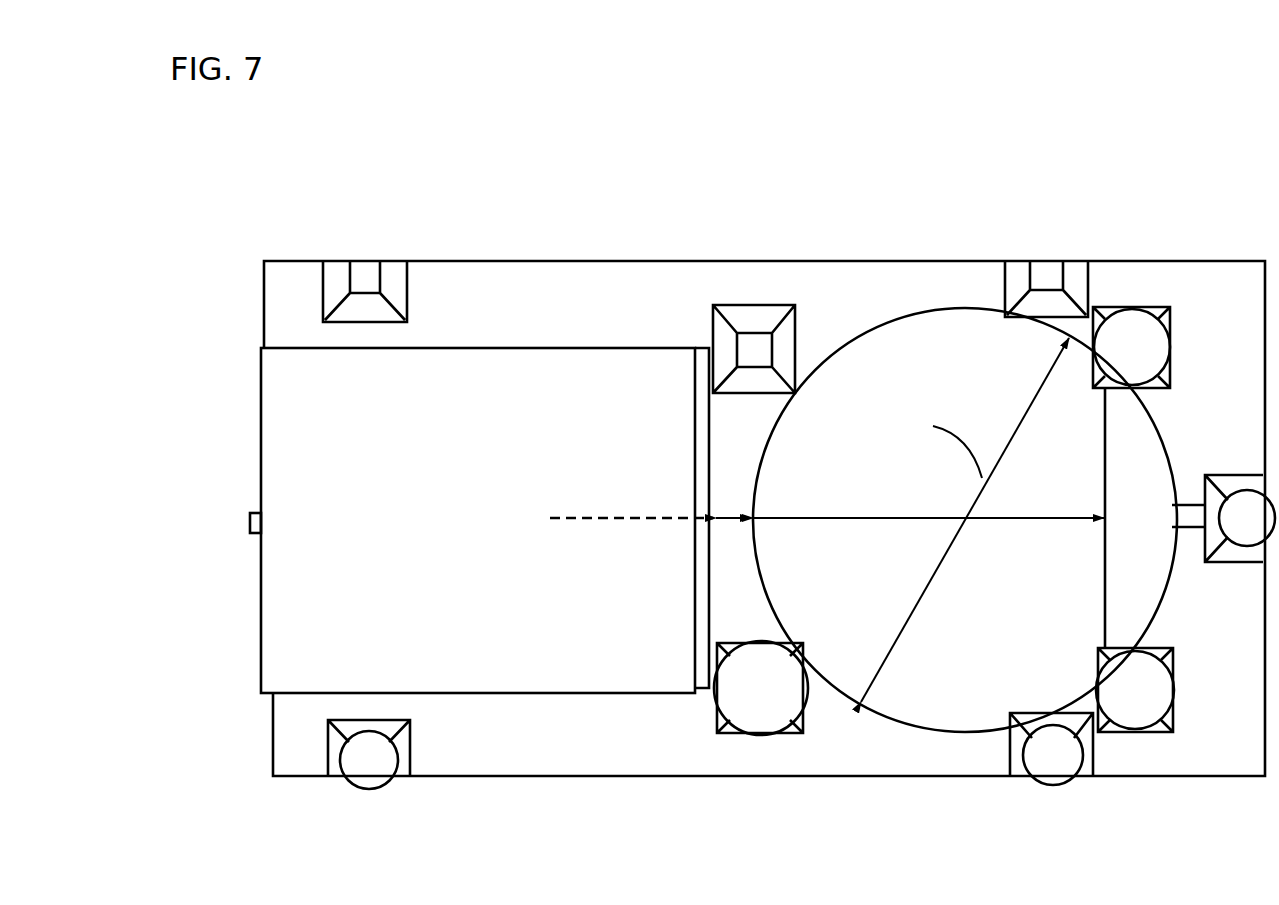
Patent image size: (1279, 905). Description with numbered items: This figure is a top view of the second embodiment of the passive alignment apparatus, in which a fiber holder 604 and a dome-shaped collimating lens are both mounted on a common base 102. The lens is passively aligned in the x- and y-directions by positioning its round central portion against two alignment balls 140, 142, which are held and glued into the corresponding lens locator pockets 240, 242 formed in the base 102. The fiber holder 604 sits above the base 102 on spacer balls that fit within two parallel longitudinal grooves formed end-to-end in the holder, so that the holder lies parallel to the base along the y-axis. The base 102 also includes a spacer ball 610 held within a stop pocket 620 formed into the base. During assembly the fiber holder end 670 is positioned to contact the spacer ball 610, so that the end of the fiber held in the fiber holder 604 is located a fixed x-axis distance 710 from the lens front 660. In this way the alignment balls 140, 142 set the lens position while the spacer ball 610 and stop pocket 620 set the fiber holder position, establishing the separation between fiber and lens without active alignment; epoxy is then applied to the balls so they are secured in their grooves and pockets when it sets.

The base 102 is at (965, 776).
The fiber holder 604 is at (533, 372).
The fiber holder end 670 is at (700, 362).
The fixed x-axis distance 710 is at (735, 512).
The lens front 660 is at (755, 522).
The alignment ball 142 is at (1133, 340).
The lens locator pocket 242 is at (1175, 322).
The alignment ball 140 is at (1133, 712).
The lens locator pocket 240 is at (1177, 717).
The spacer ball 610 is at (730, 702).
The stop pocket 620 is at (790, 733).